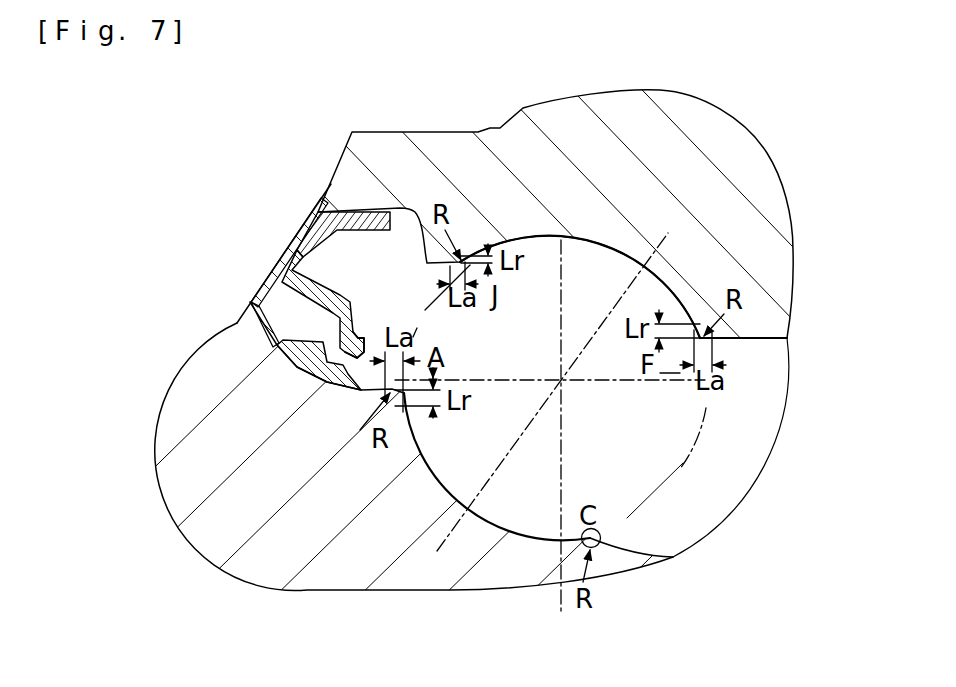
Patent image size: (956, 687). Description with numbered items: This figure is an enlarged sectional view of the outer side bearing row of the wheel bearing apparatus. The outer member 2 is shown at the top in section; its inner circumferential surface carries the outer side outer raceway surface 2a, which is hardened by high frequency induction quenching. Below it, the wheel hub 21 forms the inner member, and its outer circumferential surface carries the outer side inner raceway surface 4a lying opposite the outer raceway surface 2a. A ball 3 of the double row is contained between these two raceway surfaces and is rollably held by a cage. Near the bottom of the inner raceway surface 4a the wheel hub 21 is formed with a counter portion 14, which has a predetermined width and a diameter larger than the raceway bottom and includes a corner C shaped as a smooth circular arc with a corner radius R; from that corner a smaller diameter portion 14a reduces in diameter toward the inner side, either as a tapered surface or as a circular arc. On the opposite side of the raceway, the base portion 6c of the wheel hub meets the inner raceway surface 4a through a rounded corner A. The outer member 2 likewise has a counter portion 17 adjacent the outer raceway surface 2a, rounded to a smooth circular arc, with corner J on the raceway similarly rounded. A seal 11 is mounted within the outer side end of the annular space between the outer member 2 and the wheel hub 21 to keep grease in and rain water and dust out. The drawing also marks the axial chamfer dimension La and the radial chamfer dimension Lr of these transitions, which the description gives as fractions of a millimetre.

The outer member 2 is at (501, 157).
The outer side outer raceway surface 2a is at (562, 190).
The ball 3 is at (620, 427).
The inner raceway surface 4a is at (463, 505).
The base portion 6c is at (290, 310).
The seal 11 is at (283, 283).
The counter portion 14 is at (750, 340).
The smaller diameter portion 14a is at (622, 565).
The counter portion 17 is at (400, 305).
The wheel hub 21 is at (255, 452).